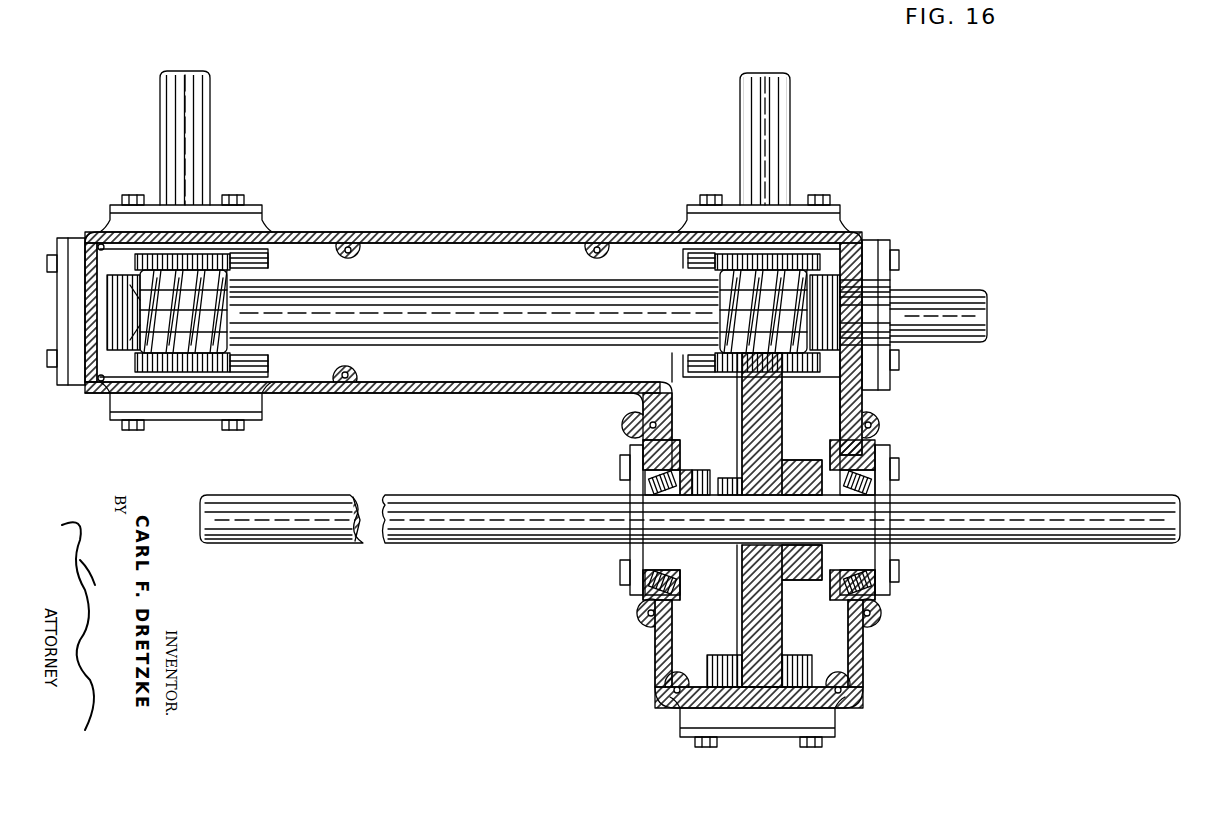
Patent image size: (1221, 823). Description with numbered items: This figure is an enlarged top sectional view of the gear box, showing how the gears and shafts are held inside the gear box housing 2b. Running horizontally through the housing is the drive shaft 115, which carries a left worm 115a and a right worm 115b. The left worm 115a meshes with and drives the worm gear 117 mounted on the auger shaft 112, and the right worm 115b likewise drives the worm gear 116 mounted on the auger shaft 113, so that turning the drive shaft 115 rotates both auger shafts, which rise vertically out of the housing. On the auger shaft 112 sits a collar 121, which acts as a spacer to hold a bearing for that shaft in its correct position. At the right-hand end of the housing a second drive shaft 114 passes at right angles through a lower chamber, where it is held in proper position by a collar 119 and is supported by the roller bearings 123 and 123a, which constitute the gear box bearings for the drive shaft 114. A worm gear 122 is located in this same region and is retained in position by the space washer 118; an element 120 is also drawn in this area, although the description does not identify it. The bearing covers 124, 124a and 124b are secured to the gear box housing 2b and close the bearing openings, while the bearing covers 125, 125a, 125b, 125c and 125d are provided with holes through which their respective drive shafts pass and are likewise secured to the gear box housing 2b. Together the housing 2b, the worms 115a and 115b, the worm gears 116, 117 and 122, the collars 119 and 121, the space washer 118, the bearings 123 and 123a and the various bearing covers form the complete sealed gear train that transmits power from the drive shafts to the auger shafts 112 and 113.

The gear box housing 2b is at (500, 240).
The auger shaft 112 is at (212, 120).
The auger shaft 113 is at (790, 118).
The drive shaft 114 is at (690, 497).
The drive shaft 115 is at (990, 311).
The left worm 115a is at (230, 300).
The right worm 115b is at (722, 363).
The worm gear 116 is at (686, 262).
The worm gear 117 is at (240, 262).
The space washer 118 is at (800, 478).
The collar 119 is at (695, 475).
The gear 120 is at (692, 667).
The collar 121 is at (240, 353).
The worm gear 122 is at (742, 378).
The roller bearing 123 is at (700, 575).
The roller bearing 123a is at (832, 572).
The bearing cover 124 is at (262, 413).
The bearing cover 124a is at (60, 385).
The bearing cover 124b is at (688, 730).
The bearing cover 125 is at (262, 212).
The bearing cover 125a is at (840, 212).
The bearing cover 125b is at (895, 245).
The bearing cover 125c is at (895, 445).
The bearing cover 125d is at (632, 445).